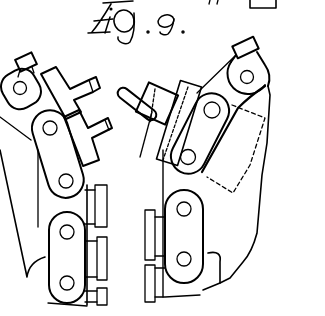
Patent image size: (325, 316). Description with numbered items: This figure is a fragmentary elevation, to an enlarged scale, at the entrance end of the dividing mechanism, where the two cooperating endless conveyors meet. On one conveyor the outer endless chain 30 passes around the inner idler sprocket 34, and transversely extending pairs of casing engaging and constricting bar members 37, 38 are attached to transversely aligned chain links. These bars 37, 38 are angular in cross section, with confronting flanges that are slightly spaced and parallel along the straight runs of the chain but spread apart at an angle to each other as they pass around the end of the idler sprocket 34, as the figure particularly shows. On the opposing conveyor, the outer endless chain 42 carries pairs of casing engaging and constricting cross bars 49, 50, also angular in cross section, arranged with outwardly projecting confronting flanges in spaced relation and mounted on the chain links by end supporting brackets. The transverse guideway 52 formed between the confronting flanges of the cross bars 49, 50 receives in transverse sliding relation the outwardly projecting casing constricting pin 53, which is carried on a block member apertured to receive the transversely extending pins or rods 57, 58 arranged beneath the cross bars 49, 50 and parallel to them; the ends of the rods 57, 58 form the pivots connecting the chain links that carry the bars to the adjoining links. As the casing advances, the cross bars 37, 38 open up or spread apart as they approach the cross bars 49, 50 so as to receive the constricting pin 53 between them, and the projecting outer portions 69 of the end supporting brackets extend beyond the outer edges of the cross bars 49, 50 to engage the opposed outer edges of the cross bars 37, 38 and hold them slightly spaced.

The outer endless chain 30 is at (75, 247).
The inner idler sprocket 34 is at (33, 198).
The constricting bar member 37 is at (100, 136).
The constricting bar member 38 is at (42, 83).
The outer endless chain 42 is at (205, 184).
The cross bar 49 is at (183, 83).
The cross bar 50 is at (135, 145).
The transverse guideway 52 is at (157, 87).
The casing constricting pin 53 is at (125, 88).
The transversely extending pin or rod 57 is at (211, 107).
The transversely extending pin or rod 58 is at (186, 161).
The projecting outer portion of end supporting bracket 69 is at (137, 116).